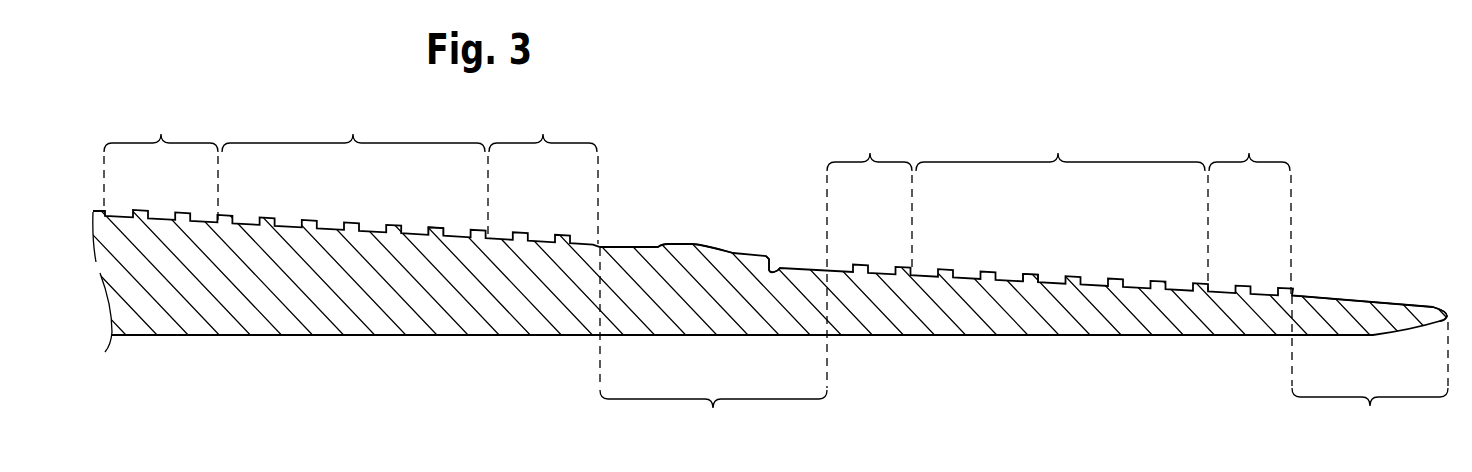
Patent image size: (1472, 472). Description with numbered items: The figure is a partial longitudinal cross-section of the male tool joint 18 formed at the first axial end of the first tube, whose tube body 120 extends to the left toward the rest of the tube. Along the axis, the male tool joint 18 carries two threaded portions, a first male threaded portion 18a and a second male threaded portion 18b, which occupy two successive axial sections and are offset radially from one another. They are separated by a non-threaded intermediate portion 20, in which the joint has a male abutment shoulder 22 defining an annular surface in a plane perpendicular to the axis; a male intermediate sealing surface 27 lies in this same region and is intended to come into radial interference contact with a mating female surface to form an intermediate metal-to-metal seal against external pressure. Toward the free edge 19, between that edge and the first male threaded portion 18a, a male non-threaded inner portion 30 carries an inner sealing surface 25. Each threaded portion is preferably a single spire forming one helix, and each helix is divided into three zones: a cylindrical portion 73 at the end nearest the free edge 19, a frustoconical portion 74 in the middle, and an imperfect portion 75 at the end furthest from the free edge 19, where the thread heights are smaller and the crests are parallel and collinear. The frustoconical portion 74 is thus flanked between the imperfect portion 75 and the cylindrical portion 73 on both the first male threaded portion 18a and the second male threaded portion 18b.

The male tool joint 18 is at (962, 378).
The first male threaded portion 18a is at (1031, 274).
The second male threaded portion 18b is at (440, 227).
The free edge 19 is at (1447, 313).
The non-threaded intermediate portion 20 is at (713, 342).
The male abutment shoulder 22 is at (786, 250).
The inner sealing surface 25 is at (1383, 298).
The male intermediate sealing surface 27 is at (706, 243).
The male non-threaded inner portion 30 is at (1370, 366).
The cylindrical portion 73 is at (890, 201).
The frustoconical portion 74 is at (715, 199).
The imperfect portion 75 is at (508, 190).
The tube body 120 is at (148, 277).